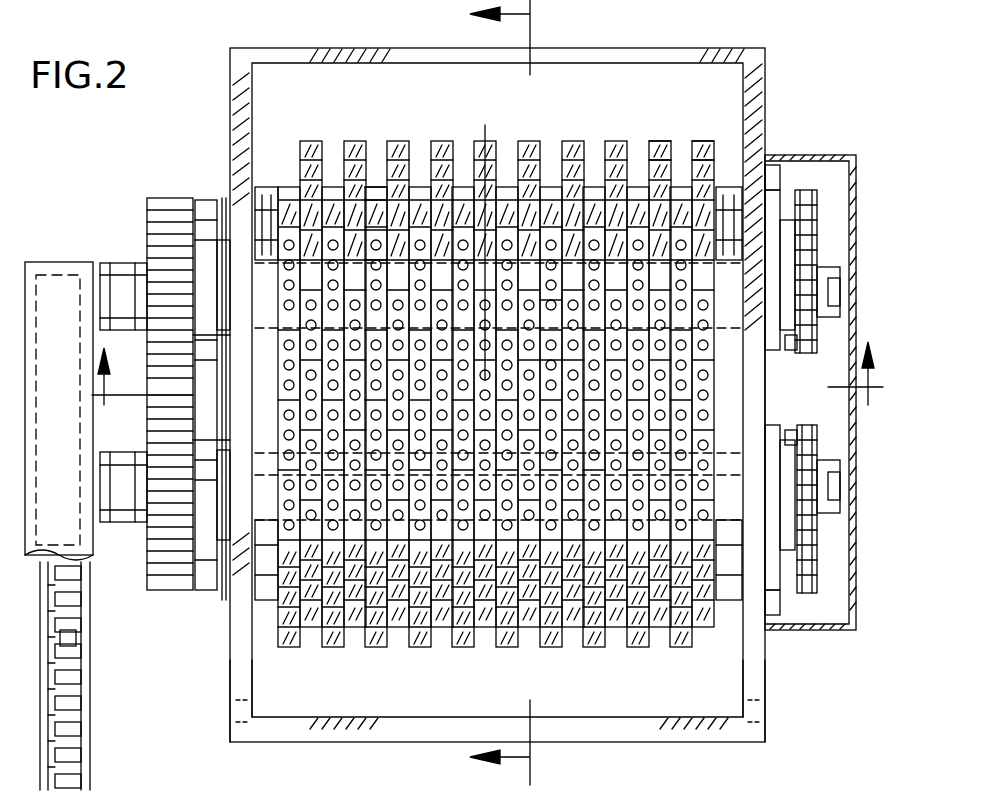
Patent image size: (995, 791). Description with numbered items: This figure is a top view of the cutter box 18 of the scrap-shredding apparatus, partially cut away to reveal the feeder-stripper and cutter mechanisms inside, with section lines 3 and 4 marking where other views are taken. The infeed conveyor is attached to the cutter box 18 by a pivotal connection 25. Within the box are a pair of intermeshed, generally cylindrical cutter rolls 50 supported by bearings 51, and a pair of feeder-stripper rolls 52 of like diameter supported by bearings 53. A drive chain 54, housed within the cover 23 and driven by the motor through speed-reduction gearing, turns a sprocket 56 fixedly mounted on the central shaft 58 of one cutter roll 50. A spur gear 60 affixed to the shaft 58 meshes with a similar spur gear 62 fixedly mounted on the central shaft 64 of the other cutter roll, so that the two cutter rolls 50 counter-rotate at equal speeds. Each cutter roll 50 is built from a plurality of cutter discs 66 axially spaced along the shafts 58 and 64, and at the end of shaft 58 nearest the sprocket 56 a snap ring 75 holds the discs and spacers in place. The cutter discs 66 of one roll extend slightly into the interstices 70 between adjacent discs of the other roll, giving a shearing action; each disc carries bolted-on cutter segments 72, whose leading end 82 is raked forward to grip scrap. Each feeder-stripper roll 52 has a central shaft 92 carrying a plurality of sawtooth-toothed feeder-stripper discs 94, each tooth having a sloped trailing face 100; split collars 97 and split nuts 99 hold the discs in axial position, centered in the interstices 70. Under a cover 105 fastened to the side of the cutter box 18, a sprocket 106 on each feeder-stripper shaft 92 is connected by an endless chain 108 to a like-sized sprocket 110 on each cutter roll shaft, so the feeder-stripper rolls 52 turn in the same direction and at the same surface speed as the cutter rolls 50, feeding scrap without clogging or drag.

The section line 3- 3 is at (509, 394).
The section line 4- 4 is at (485, 382).
The cutter box 18 is at (777, 117).
The cover 23 is at (46, 250).
The pivotal connection 25 is at (768, 712).
The cutter rolls 50 is at (722, 417).
The bearings 51 is at (776, 436).
The feeder-stripper rolls 52 is at (316, 654).
The bearing plates 53 is at (776, 576).
The drive chain 54 is at (92, 770).
The sprocket 56 is at (74, 645).
The central shaft 58 is at (512, 650).
The spur gear 60 is at (157, 571).
The spur gear 62 is at (150, 214).
The central shaft 64 is at (107, 262).
The cutter discs 66 is at (258, 580).
The interstices 70 is at (507, 375).
The cutter segments 72 is at (532, 360).
The snap ring 75 is at (258, 477).
The leading end 82 is at (372, 222).
The central shaft 92 is at (206, 558).
The feeder-stripper discs 94 is at (655, 650).
The split collars 97 is at (722, 566).
The split nuts 99 is at (250, 651).
The sloped trailing face 100 is at (310, 338).
The cover 105 is at (857, 292).
The sprocket 106 is at (810, 580).
The chain 108 is at (819, 530).
The sprocket 110 is at (813, 447).